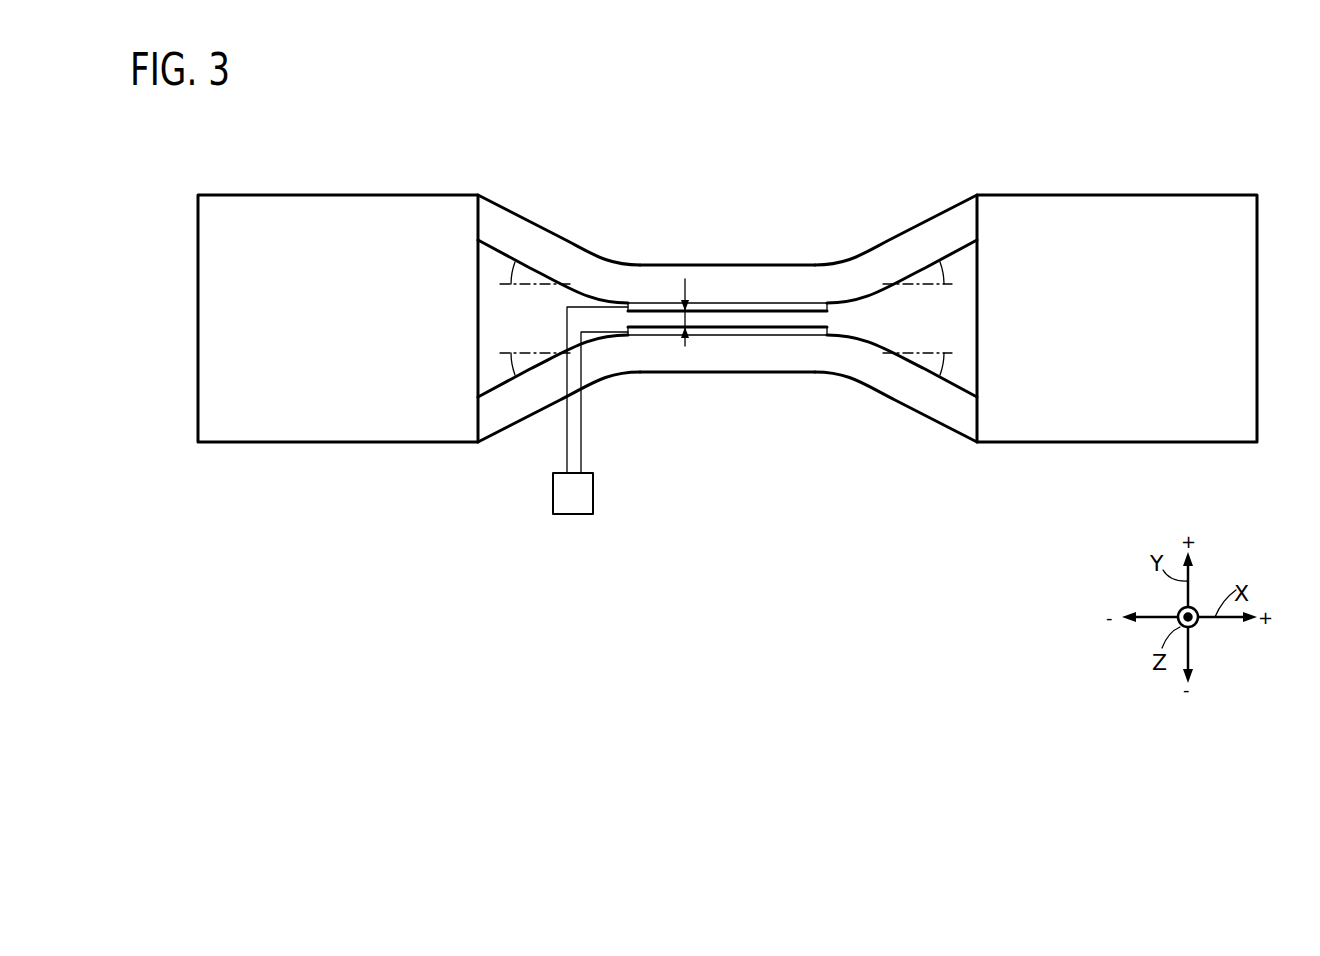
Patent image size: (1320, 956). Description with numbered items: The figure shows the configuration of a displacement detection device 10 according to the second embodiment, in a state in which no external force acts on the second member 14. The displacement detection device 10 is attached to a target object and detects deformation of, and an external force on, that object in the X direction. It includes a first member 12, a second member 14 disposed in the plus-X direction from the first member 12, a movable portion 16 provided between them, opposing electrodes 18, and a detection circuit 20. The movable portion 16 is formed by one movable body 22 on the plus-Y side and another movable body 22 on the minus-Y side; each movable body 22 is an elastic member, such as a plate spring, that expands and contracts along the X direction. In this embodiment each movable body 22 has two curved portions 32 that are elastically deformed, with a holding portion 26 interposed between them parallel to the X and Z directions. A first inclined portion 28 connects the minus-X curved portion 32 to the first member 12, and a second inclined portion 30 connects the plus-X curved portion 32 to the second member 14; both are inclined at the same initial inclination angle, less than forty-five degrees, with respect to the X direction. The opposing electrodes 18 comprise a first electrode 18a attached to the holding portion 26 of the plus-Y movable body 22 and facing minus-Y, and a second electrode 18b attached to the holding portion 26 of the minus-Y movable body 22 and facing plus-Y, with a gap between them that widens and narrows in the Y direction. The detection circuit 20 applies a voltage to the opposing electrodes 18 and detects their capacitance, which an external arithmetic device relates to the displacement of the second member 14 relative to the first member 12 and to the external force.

The displacement detection device 10 is at (380, 100).
The first member 12 is at (298, 208).
The second member 14 is at (1098, 208).
The movable portion 16 is at (782, 172).
The opposing electrodes 18 is at (797, 318).
The first electrode 18a is at (829, 307).
The second electrode 18b is at (829, 332).
The detection circuit 20 is at (577, 515).
The movable body 22 is at (727, 320).
The holding portion 26 is at (725, 275).
The first inclined portion 28 is at (566, 258).
The second inclined portion 30 is at (888, 260).
The curved portion 32 is at (727, 320).